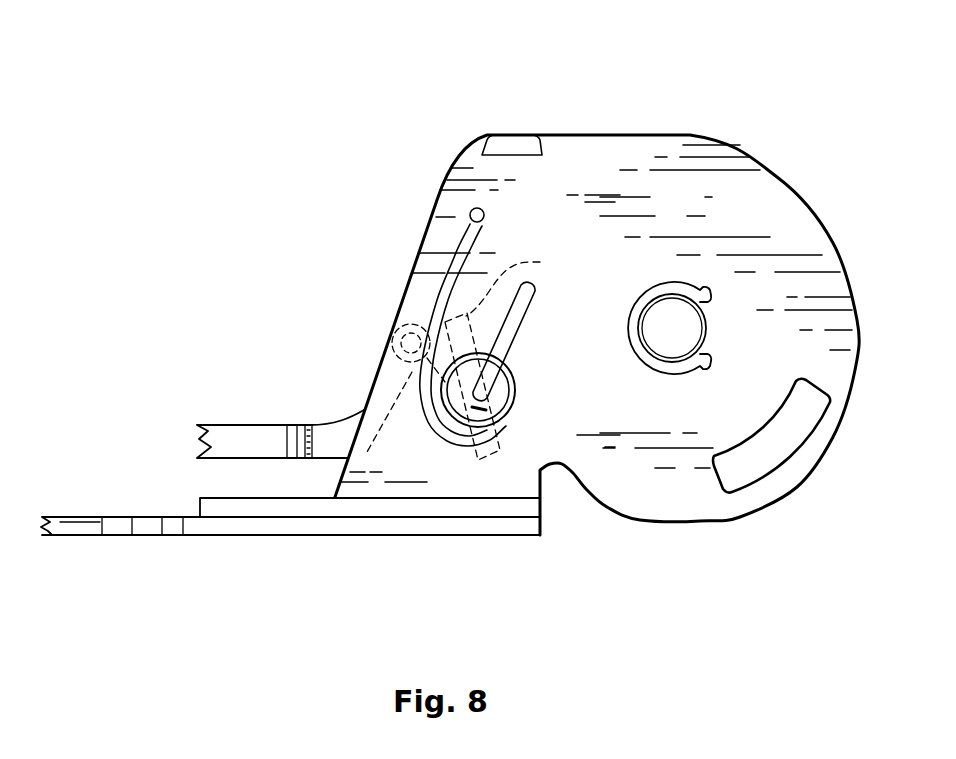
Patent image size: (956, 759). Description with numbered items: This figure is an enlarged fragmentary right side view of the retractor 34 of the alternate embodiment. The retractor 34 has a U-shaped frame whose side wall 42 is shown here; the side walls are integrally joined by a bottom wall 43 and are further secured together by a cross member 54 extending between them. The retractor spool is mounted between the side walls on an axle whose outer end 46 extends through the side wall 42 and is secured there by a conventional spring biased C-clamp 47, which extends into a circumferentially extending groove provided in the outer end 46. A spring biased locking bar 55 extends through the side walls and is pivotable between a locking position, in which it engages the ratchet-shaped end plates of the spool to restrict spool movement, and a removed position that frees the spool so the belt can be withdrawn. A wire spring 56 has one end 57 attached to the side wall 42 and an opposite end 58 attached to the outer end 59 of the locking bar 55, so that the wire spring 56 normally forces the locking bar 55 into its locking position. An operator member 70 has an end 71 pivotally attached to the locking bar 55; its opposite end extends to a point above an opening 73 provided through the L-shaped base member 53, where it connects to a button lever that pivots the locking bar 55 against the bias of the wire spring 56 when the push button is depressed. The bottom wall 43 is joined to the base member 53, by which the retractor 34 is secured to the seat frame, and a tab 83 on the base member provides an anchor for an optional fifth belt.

The retractor 34 is at (597, 280).
The side wall 42 is at (596, 313).
The bottom wall 43 is at (370, 552).
The outer end 46 is at (706, 332).
The spring biased C-clamp 47 is at (639, 345).
The L-shaped base member 53 is at (290, 573).
The cross member 54 is at (520, 109).
The spring biased locking bar 55 is at (511, 354).
The wire spring 56 is at (434, 331).
The end of wire spring 57 is at (508, 197).
The opposite end of wire spring 58 is at (526, 346).
The outer end of locking bar 59 is at (498, 415).
The operator member 70 is at (280, 407).
The end of operator member 71 is at (366, 355).
The opening 73 is at (77, 570).
The tab 83 is at (163, 581).